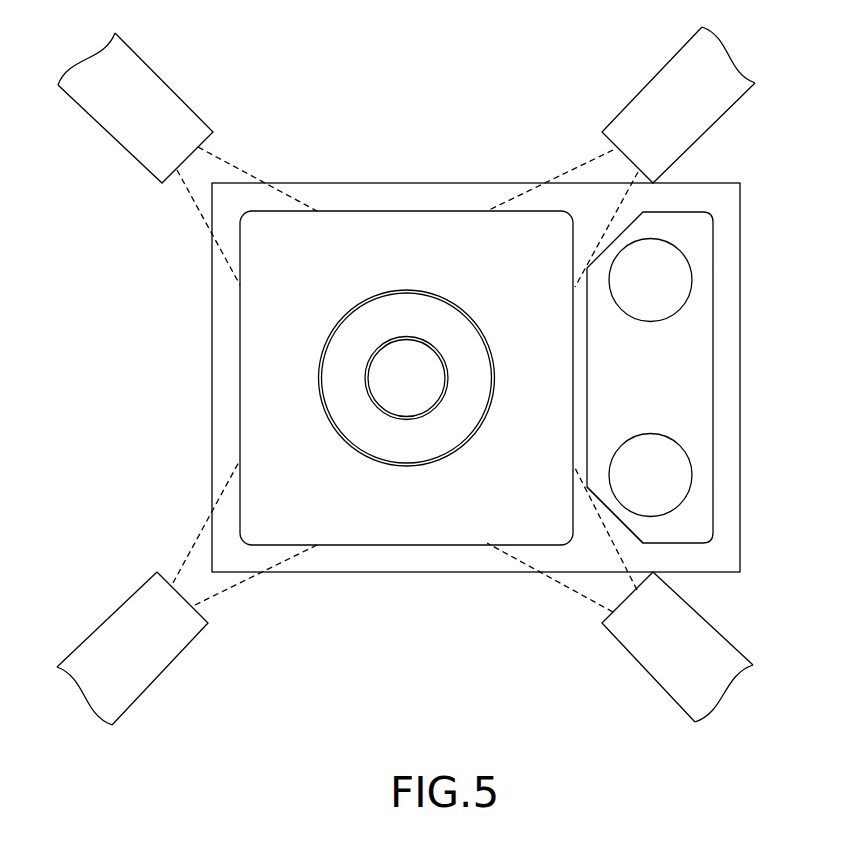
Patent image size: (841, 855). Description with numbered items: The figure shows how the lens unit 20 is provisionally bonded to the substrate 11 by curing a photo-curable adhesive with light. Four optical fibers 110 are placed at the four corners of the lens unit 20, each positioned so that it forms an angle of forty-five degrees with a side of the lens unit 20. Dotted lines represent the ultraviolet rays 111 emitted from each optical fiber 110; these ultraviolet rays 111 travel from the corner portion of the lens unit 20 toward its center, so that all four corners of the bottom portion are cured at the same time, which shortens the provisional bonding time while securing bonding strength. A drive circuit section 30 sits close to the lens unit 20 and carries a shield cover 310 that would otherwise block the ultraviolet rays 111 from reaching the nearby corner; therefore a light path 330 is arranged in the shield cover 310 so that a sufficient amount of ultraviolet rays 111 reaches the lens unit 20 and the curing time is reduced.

The substrate 11 is at (357, 183).
The lens unit 20 is at (428, 203).
The drive circuit section 30 is at (720, 260).
The shield cover 310 is at (713, 390).
The light path 330 is at (628, 545).
The optical fiber 110 is at (642, 665).
The ultraviolet rays 111 is at (577, 587).